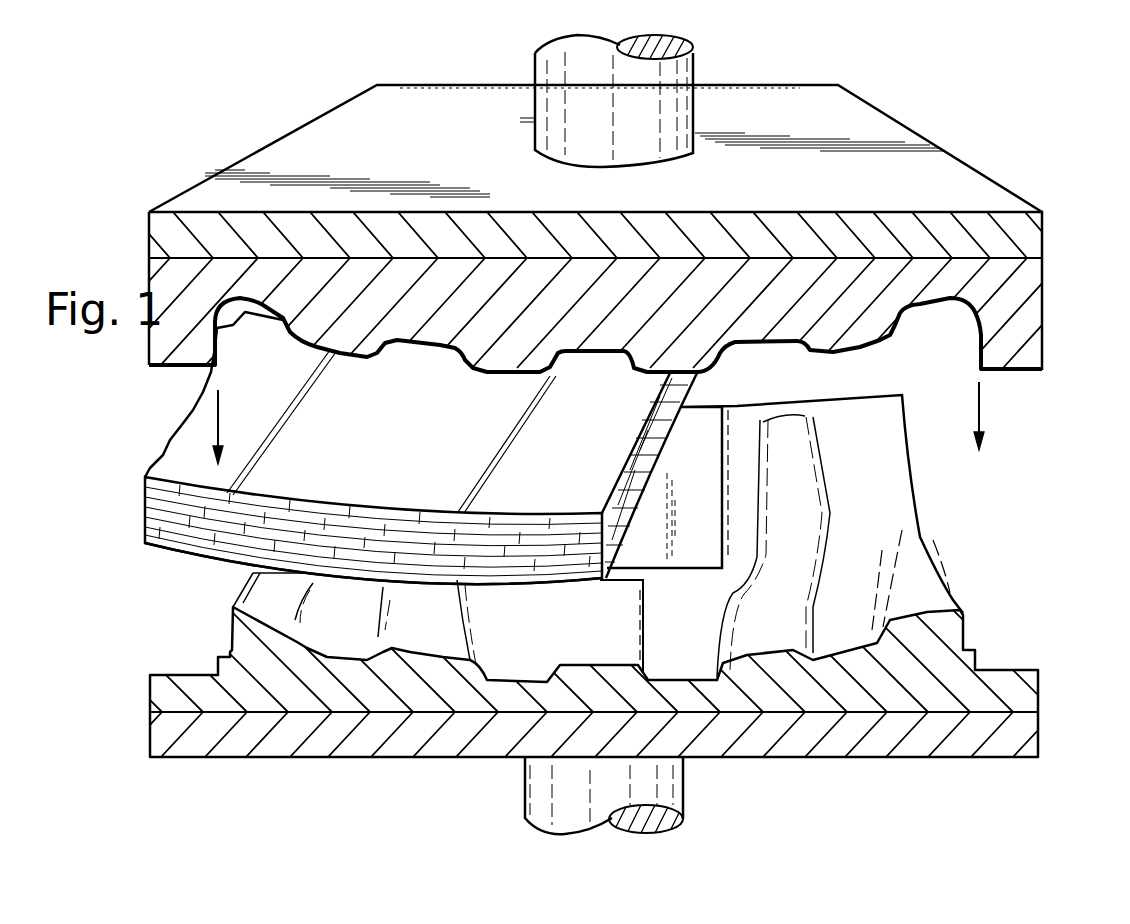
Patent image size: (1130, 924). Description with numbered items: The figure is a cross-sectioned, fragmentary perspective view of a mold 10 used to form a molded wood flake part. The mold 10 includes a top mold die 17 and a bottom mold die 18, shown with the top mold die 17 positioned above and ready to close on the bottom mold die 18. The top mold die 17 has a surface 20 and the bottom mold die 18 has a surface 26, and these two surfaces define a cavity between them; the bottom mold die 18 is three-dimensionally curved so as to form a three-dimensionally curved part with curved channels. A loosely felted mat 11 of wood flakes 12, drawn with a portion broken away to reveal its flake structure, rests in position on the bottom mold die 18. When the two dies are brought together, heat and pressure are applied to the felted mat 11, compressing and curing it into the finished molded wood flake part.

The mold 10 is at (1081, 742).
The loosely felted mat 11 is at (396, 450).
The wood flakes 12 is at (167, 527).
The top mold die 17 is at (1040, 374).
The bottom mold die 18 is at (1038, 689).
The surface of top mold die 20 is at (866, 349).
The surface of bottom mold die 26 is at (780, 593).